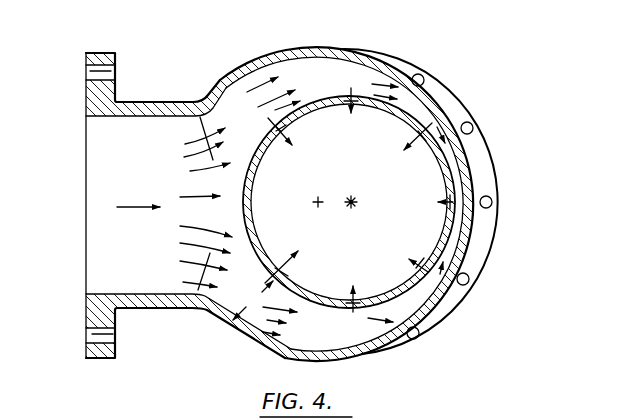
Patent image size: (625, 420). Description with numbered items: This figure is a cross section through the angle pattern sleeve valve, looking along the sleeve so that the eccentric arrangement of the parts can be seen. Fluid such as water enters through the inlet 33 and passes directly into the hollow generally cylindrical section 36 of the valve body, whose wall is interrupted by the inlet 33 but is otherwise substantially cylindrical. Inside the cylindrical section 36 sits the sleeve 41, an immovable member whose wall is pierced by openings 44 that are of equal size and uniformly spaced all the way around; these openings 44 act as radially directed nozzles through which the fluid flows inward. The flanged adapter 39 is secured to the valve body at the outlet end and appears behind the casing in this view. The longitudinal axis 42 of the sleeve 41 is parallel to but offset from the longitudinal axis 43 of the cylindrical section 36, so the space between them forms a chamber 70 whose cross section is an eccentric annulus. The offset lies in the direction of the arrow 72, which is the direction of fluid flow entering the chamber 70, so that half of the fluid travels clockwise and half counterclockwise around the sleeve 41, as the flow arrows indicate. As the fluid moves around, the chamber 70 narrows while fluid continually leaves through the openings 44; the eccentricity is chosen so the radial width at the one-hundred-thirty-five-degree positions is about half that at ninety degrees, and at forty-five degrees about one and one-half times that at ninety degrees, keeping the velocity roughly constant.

The inlet 33 is at (125, 181).
The hollow generally cylindrical section 36 is at (445, 110).
The flanged adapter 39 is at (410, 67).
The sleeve 41 is at (318, 97).
The longitudinal axis of the sleeve 42 is at (353, 199).
The longitudinal axis of the cylindrical section 43 is at (318, 199).
The openings 44 is at (358, 300).
The chamber 70 is at (392, 324).
The arrow 72 is at (128, 209).